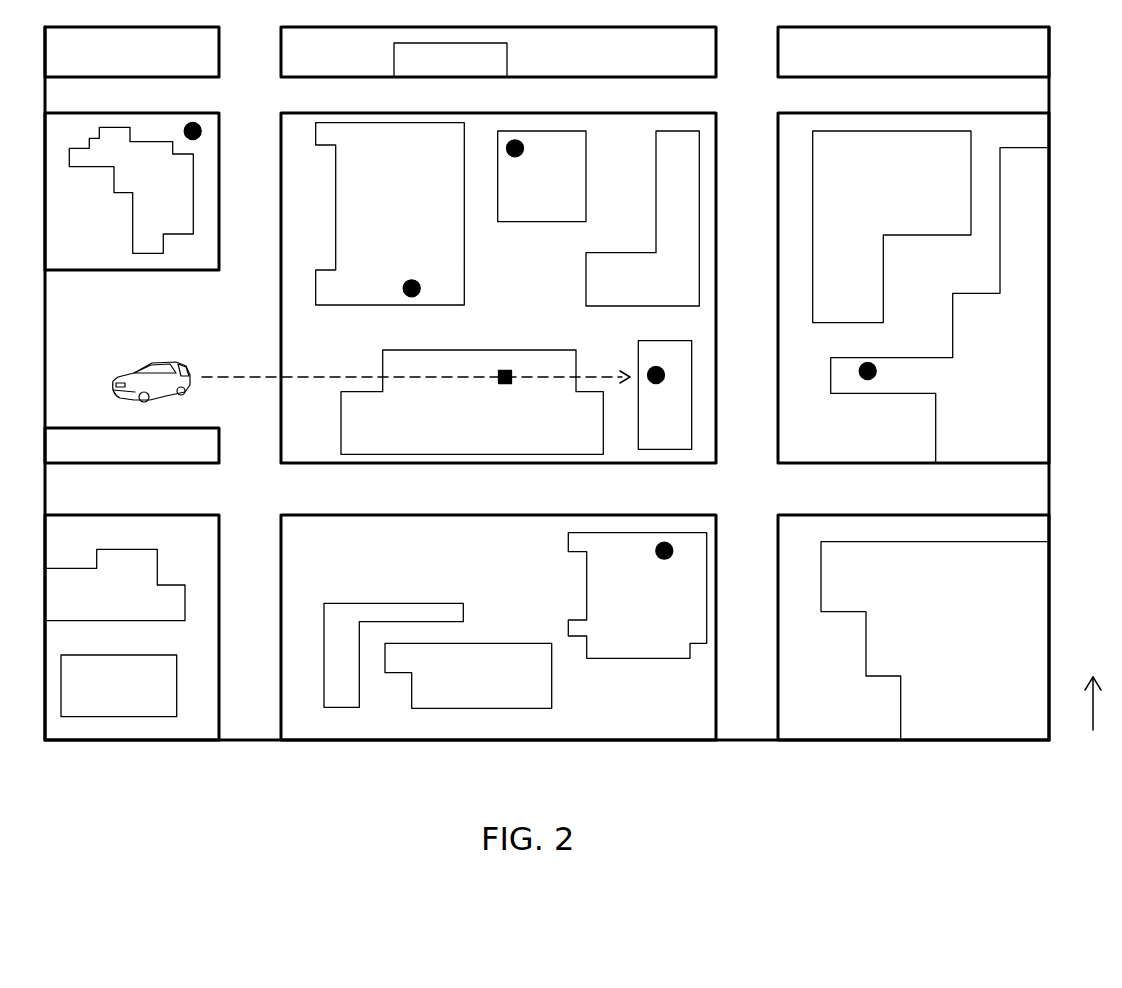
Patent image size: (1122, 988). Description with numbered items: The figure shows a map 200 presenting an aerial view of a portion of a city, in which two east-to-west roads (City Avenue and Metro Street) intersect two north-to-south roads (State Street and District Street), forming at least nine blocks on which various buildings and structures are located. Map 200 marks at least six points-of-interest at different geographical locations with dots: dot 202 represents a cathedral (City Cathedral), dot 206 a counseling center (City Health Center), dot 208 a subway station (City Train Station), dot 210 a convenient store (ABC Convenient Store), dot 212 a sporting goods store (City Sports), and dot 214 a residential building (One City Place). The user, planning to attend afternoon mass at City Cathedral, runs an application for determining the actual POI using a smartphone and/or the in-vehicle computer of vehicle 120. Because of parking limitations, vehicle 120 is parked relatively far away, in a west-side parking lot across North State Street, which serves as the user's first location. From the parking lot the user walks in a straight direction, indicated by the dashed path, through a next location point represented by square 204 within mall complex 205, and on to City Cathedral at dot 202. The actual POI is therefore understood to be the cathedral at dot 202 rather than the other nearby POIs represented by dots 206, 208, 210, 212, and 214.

The vehicle 120 is at (112, 388).
The map 200 is at (550, 802).
The dot 202 is at (654, 384).
The square 204 is at (511, 384).
The mall complex 205 is at (472, 402).
The dot 206 is at (404, 289).
The dot 208 is at (200, 125).
The dot 210 is at (517, 157).
The dot 212 is at (866, 380).
The dot 214 is at (656, 553).